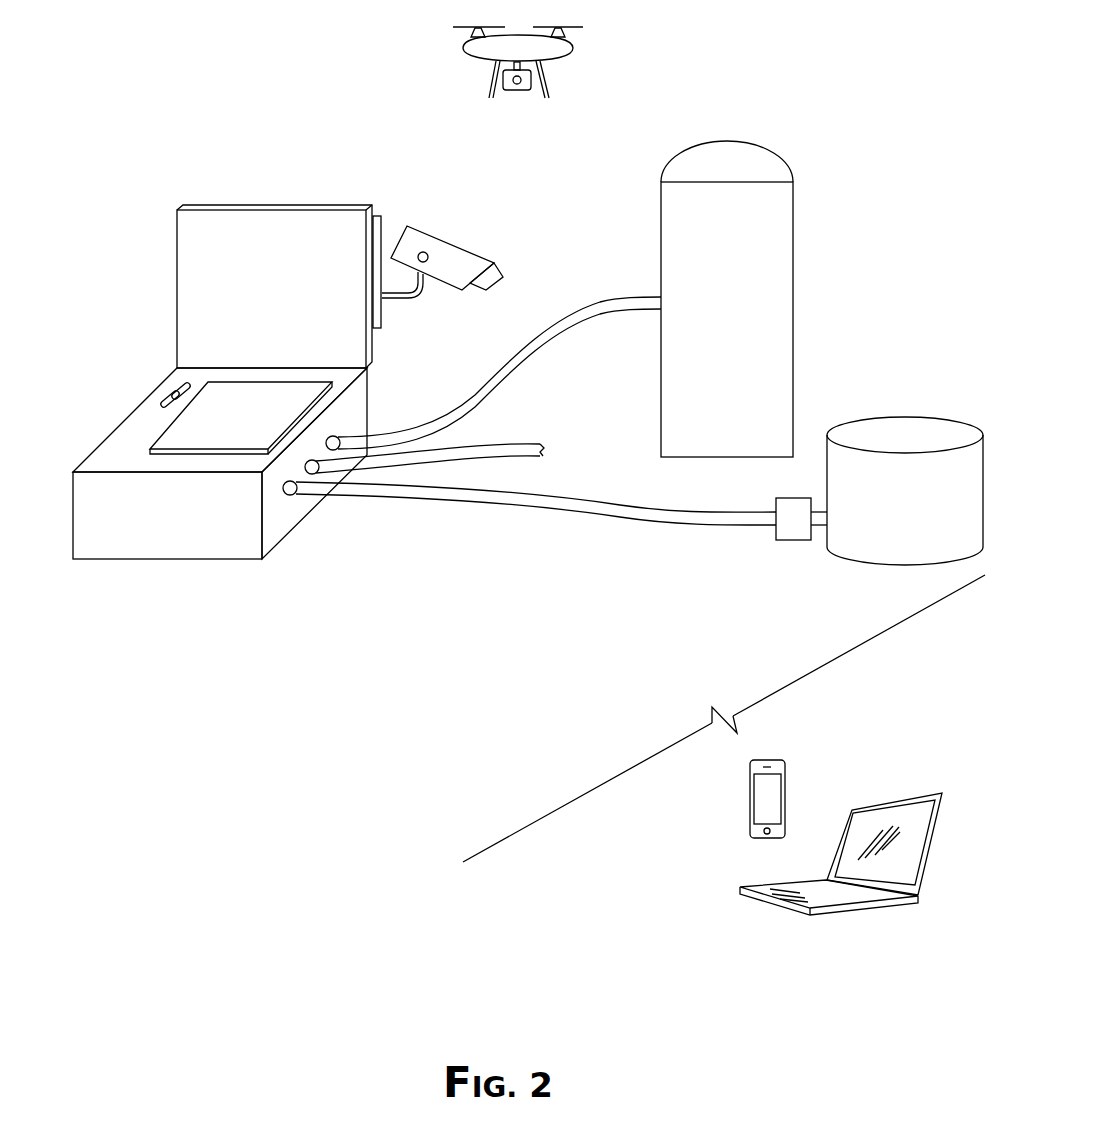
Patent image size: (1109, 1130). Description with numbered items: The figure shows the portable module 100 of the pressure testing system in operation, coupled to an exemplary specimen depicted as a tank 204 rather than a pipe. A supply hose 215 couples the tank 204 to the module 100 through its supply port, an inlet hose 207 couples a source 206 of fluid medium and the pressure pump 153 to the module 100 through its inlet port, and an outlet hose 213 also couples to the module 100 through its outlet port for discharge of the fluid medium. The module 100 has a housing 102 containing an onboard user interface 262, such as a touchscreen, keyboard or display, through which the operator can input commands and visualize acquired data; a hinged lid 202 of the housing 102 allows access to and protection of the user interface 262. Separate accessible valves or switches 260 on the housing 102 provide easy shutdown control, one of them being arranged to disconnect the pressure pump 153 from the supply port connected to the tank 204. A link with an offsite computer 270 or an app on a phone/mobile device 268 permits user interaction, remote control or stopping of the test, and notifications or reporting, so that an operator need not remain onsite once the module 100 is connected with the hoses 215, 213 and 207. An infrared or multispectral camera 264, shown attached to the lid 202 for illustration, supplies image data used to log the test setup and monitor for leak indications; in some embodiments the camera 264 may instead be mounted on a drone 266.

The portable module 100 is at (137, 260).
The housing 102 is at (177, 558).
The hinged lid 202 is at (230, 204).
The tank 204 is at (745, 327).
The source of fluid medium 206 is at (927, 515).
The inlet hose 207 is at (392, 507).
The outlet hose 213 is at (524, 445).
The supply hose 215 is at (637, 320).
The pressure pump 153 is at (783, 542).
The valves or switches 260 is at (165, 386).
The user interface 262 is at (262, 425).
The camera 264 is at (435, 232).
The drone 266 is at (460, 50).
The phone/mobile device 268 is at (772, 762).
The offsite computer 270 is at (782, 905).